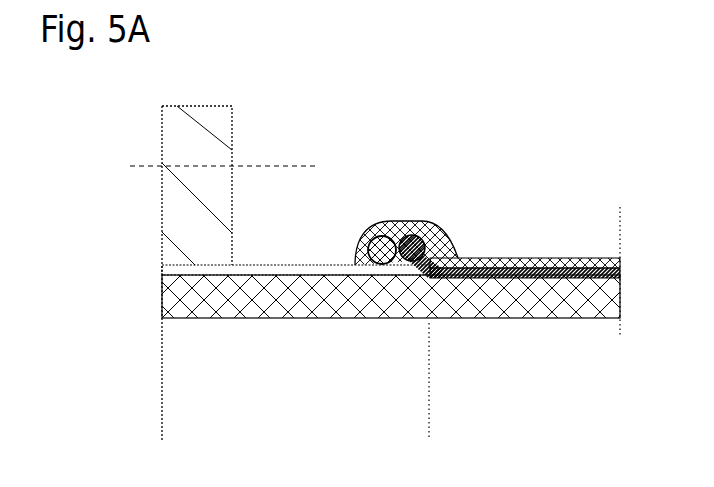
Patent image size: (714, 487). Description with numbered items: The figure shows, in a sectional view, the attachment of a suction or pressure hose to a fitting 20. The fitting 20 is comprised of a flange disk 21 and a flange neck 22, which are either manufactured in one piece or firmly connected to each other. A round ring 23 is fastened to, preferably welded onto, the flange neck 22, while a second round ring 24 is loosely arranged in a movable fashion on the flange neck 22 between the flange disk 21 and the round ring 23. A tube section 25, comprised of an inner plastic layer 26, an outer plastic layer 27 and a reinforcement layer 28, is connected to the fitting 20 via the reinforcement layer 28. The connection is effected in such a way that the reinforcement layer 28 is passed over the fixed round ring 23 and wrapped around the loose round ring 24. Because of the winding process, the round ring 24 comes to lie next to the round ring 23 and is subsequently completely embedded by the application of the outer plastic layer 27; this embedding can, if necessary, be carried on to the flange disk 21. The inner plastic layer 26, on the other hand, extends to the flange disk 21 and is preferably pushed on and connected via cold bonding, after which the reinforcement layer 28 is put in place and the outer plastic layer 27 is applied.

The fitting 20 is at (215, 145).
The flange disk 21 is at (187, 235).
The flange neck 22 is at (259, 272).
The round ring 23 is at (415, 248).
The second round ring 24 is at (383, 250).
The tube section 25 is at (513, 293).
The inner plastic layer 26 is at (465, 298).
The outer plastic layer 27 is at (512, 268).
The reinforcement layer 28 is at (550, 275).